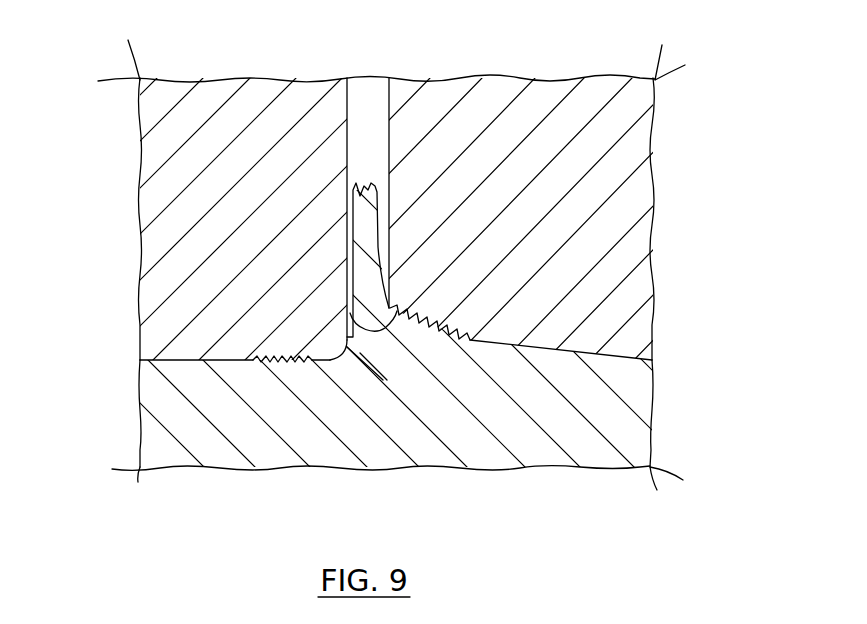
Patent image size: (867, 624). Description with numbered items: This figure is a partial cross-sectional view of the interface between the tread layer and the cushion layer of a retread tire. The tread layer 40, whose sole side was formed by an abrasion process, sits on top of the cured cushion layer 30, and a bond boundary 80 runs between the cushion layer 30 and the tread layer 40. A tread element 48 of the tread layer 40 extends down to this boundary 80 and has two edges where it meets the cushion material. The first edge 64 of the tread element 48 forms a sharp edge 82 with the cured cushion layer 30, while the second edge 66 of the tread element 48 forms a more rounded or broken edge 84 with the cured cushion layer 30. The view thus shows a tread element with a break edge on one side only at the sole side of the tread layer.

The cushion layer 30 is at (206, 418).
The tread layer 40 is at (642, 194).
The tread element 48 is at (368, 150).
The first edge 64 is at (348, 372).
The second edge 66 is at (400, 357).
The bond boundary 80 is at (197, 360).
The sharp edge 82 is at (400, 353).
The broken edge 84 is at (345, 313).